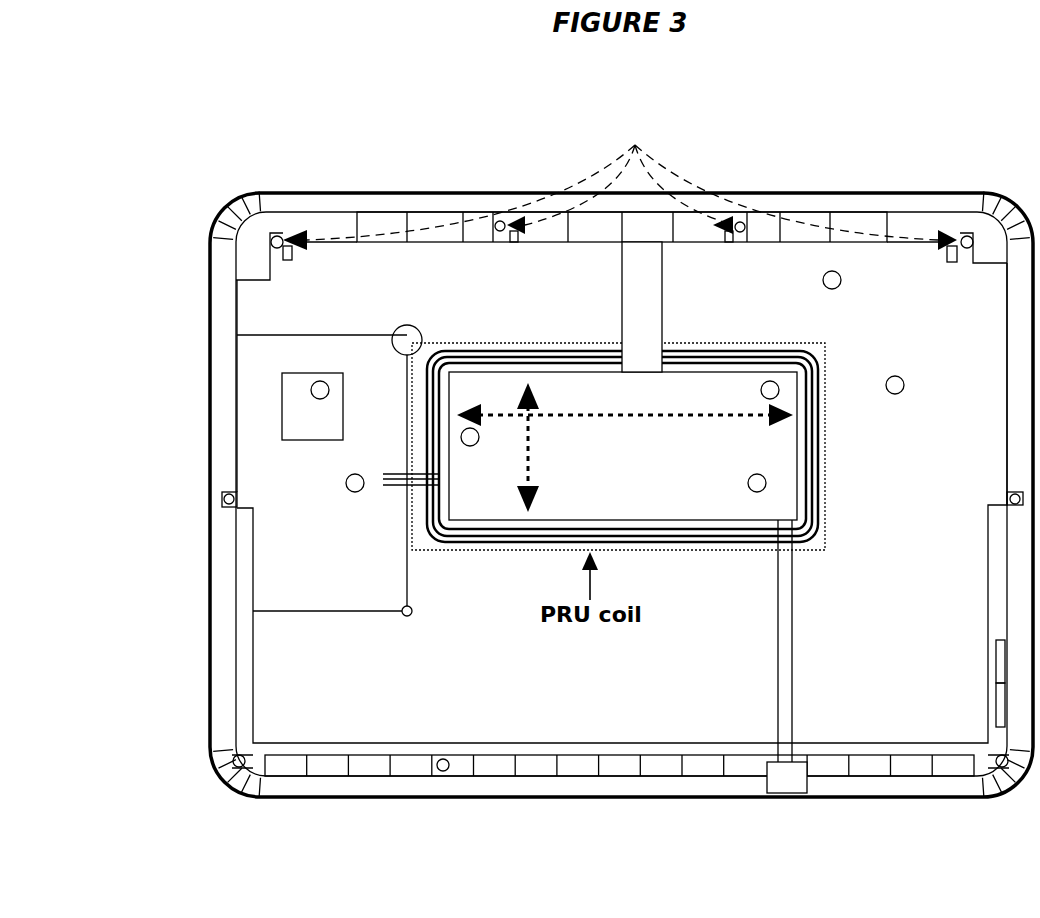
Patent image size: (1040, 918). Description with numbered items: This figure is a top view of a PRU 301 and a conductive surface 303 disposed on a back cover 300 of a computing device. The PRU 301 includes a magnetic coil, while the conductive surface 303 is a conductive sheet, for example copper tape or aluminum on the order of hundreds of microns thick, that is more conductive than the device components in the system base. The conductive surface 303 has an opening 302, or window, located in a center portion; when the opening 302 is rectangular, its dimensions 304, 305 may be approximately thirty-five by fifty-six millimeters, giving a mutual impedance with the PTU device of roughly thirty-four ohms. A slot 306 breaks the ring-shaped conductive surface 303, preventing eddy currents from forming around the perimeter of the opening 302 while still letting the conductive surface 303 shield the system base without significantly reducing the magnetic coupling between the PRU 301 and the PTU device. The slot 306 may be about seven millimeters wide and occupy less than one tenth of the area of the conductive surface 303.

The back cover 300 is at (170, 150).
The PRU 301 is at (540, 335).
The opening 302 is at (666, 496).
The conductive surface 303 is at (918, 520).
The dimension of opening 304 is at (532, 434).
The dimension of opening 305 is at (743, 418).
The slot 306 is at (827, 627).